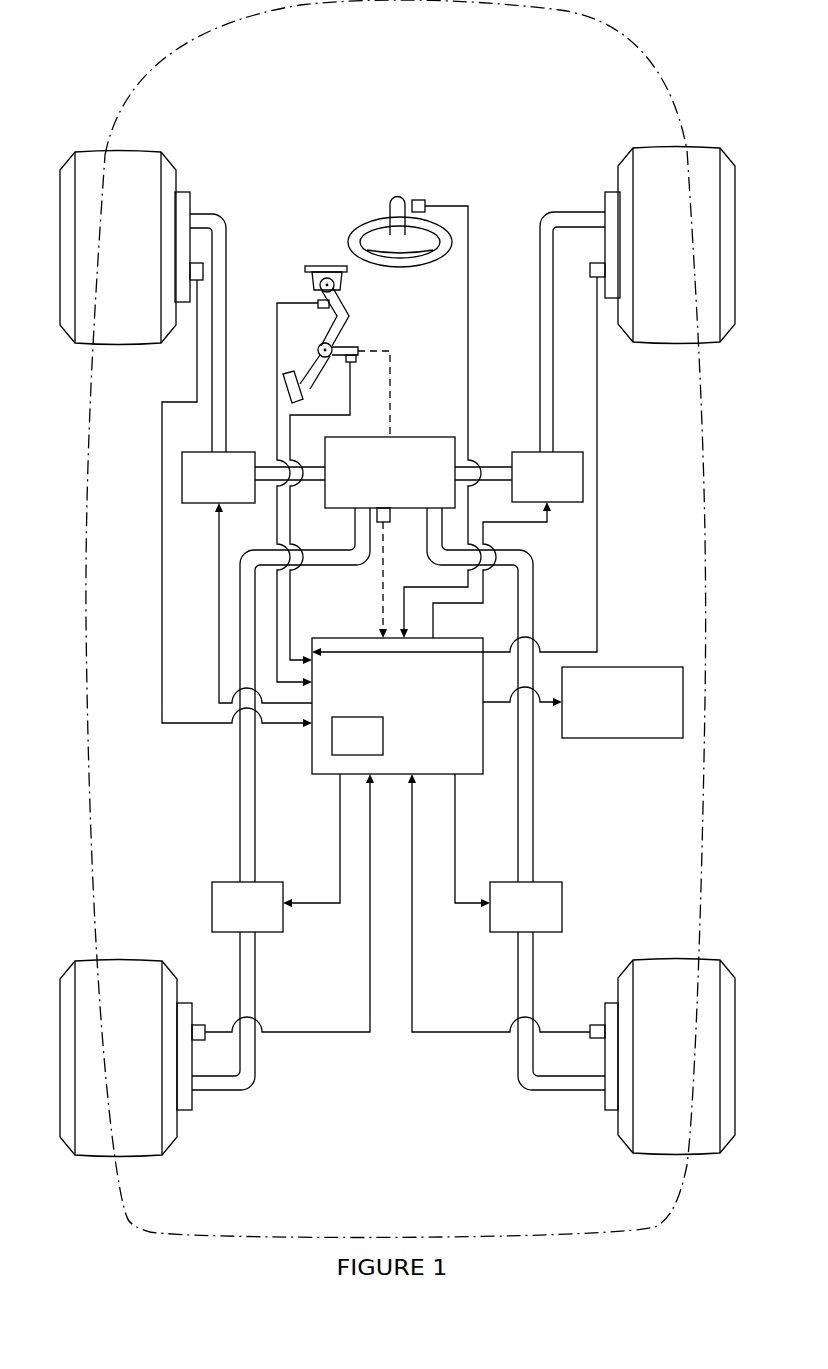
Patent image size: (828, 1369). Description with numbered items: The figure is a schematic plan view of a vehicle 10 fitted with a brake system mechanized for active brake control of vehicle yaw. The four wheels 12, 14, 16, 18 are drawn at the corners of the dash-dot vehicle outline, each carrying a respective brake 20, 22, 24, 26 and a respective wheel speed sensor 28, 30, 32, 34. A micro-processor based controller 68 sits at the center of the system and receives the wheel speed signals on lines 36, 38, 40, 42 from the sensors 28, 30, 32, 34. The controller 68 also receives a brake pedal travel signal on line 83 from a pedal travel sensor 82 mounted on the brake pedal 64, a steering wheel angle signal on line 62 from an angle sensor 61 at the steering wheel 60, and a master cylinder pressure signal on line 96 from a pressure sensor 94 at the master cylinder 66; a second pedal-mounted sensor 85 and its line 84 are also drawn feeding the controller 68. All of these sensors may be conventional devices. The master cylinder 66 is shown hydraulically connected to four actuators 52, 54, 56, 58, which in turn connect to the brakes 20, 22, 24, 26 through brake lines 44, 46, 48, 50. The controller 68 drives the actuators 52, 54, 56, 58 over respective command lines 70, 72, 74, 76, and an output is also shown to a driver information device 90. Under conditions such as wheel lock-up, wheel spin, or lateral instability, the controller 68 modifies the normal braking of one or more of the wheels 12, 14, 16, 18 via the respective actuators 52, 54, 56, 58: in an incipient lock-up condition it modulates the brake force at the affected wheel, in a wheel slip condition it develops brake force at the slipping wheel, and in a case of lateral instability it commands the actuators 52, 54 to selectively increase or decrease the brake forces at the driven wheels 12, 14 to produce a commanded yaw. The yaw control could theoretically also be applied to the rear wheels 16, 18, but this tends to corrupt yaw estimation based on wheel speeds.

The vehicle 10 is at (638, 30).
The wheel 12 is at (138, 158).
The wheel 14 is at (656, 155).
The wheel 16 is at (130, 1150).
The wheel 18 is at (670, 1150).
The brake 20 is at (184, 194).
The brake 22 is at (608, 194).
The brake 24 is at (186, 1107).
The brake 26 is at (611, 1105).
The wheel speed sensor 28 is at (201, 265).
The wheel speed sensor 30 is at (590, 266).
The wheel speed sensor 32 is at (198, 1027).
The wheel speed sensor 34 is at (596, 1026).
The line 36 is at (161, 420).
The line 38 is at (598, 420).
The line 40 is at (332, 1033).
The line 42 is at (435, 1033).
The front left hydraulic line 44 is at (214, 217).
The front right hydraulic line 46 is at (553, 218).
The rear left hydraulic line 48 is at (250, 968).
The rear right hydraulic line 50 is at (524, 990).
The actuator 52 is at (181, 470).
The actuator 54 is at (584, 470).
The actuator 56 is at (211, 898).
The actuator 58 is at (563, 894).
The steering wheel 60 is at (350, 240).
The angle sensor 61 is at (413, 202).
The line 62 is at (442, 205).
The brake pedal 64 is at (285, 406).
The master cylinder 66 is at (397, 444).
The controller 68 is at (470, 766).
The front left actuator control line 70 is at (217, 565).
The front right actuator control line 72 is at (526, 524).
The rear left actuator control line 74 is at (306, 904).
The rear right actuator control line 76 is at (472, 904).
The pedal travel sensor 82 is at (355, 362).
The line 83 is at (276, 312).
The pedal force sensor signal line 84 is at (297, 635).
The pedal position sensor 85 is at (325, 309).
The driver information display 90 is at (628, 672).
The pressure sensor 94 is at (388, 522).
The line 96 is at (380, 582).